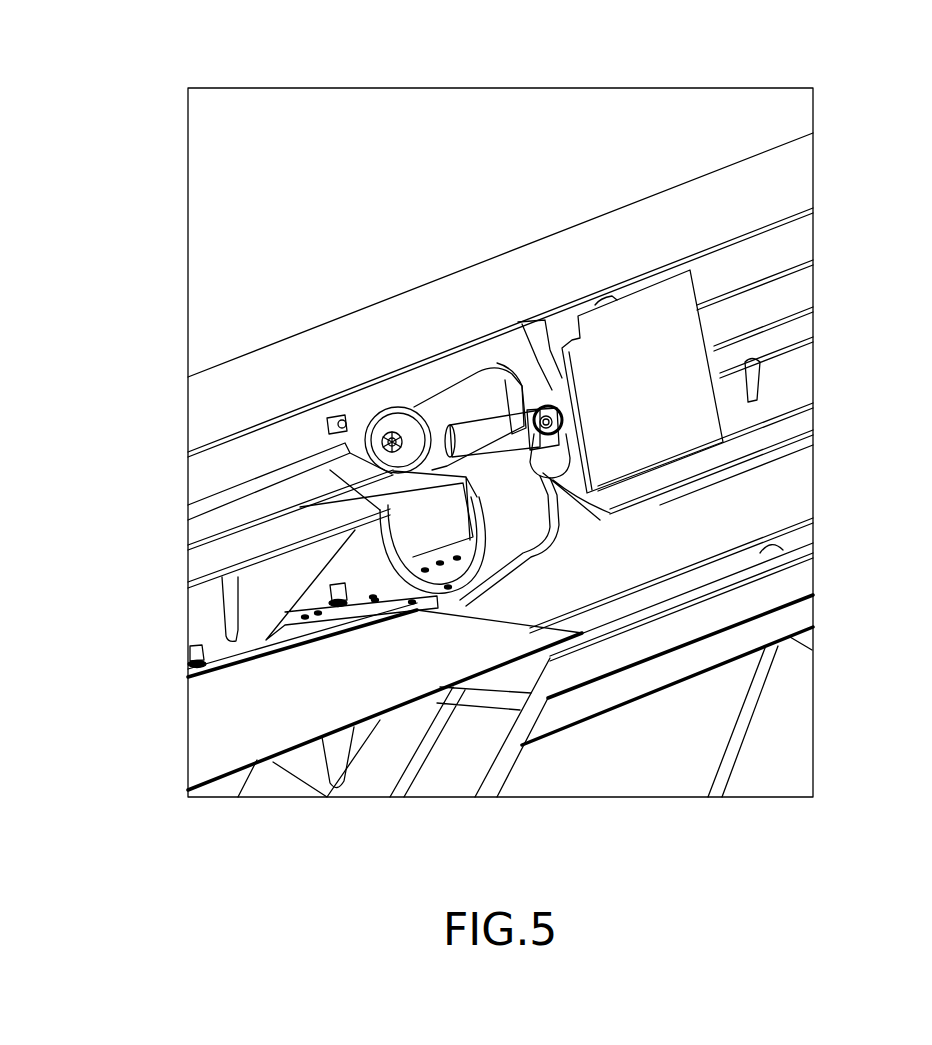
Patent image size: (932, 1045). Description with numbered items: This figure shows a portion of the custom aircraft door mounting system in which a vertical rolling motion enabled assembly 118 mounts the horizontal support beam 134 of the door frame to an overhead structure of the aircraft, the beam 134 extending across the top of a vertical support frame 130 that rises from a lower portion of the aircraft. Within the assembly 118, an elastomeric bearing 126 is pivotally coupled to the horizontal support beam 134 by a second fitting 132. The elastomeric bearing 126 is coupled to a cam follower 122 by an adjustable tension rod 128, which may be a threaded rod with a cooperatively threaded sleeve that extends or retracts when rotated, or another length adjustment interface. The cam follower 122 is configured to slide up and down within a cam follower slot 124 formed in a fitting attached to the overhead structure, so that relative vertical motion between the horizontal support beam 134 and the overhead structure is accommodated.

The vertical rolling motion enabled assembly 118 is at (708, 330).
The cam follower 122 is at (563, 421).
The cam follower slot 124 is at (550, 405).
The elastomeric bearing 126 is at (388, 412).
The adjustable tension rod 128 is at (483, 458).
The vertical support frame 130 is at (523, 548).
The second fitting 132 is at (435, 387).
The horizontal support beam 134 is at (393, 487).